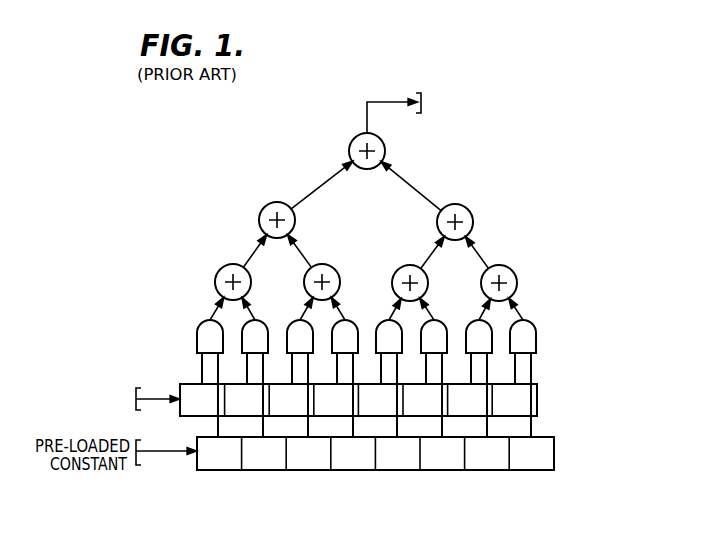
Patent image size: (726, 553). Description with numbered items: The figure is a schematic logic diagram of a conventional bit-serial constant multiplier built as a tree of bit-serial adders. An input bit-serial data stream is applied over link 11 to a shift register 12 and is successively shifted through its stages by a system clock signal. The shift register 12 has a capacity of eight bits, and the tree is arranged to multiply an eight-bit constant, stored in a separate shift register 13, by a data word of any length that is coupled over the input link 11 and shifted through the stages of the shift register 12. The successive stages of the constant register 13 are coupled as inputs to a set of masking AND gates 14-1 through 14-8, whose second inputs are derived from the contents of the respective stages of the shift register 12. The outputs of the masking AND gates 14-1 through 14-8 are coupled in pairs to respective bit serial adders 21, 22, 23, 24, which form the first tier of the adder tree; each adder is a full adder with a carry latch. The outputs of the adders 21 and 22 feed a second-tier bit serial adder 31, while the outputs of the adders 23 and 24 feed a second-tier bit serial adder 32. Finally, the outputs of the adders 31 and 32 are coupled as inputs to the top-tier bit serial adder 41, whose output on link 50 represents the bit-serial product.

The input link 11 is at (153, 395).
The shift register 12 is at (538, 389).
The shift register 13 is at (556, 457).
The masking AND gate 14-1 is at (197, 338).
The masking AND gate 14-8 is at (537, 333).
The bit serial adder 21 is at (218, 273).
The bit serial adder 22 is at (330, 265).
The bit serial adder 23 is at (392, 283).
The bit serial adder 24 is at (514, 271).
The bit serial adder 31 is at (267, 206).
The bit serial adder 32 is at (470, 209).
The bit serial adder 41 is at (354, 137).
The output link 50 is at (390, 101).